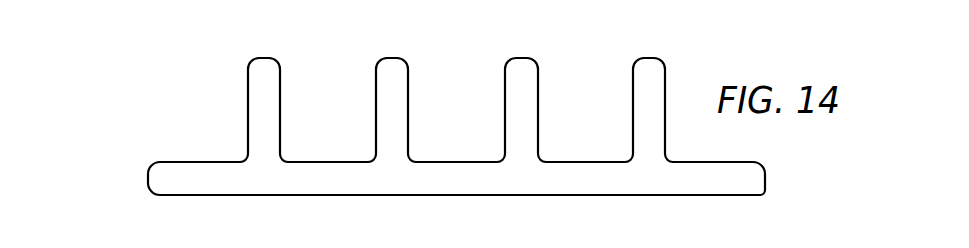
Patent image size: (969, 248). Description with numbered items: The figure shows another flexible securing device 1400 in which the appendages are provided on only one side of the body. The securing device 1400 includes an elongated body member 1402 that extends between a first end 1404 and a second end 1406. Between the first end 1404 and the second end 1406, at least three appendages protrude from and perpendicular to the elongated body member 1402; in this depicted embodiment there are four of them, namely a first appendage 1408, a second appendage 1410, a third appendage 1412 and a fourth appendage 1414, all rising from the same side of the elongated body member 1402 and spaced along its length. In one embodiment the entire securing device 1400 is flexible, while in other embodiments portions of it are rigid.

The securing device 1400 is at (667, 46).
The elongated body member 1402 is at (452, 178).
The first end 1404 is at (167, 177).
The second end 1406 is at (753, 177).
The first appendage 1408 is at (262, 72).
The second appendage 1410 is at (392, 73).
The third appendage 1412 is at (520, 72).
The fourth appendage 1414 is at (647, 74).